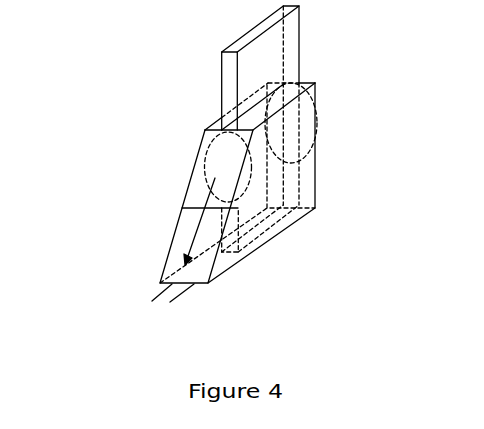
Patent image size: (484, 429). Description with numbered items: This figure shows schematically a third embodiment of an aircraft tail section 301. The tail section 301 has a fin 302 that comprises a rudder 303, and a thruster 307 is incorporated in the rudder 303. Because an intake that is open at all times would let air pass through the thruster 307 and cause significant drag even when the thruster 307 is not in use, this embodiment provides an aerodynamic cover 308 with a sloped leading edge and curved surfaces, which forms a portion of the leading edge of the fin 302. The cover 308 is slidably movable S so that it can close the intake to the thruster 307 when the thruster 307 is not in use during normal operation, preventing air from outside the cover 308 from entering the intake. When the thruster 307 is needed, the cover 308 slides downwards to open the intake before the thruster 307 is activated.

The aircraft tail section 301 is at (225, 159).
The fin 302 is at (228, 260).
The rudder 303 is at (233, 75).
The thruster 307 is at (287, 131).
The aerodynamic cover 308 is at (188, 222).
The sliding movement S is at (197, 232).